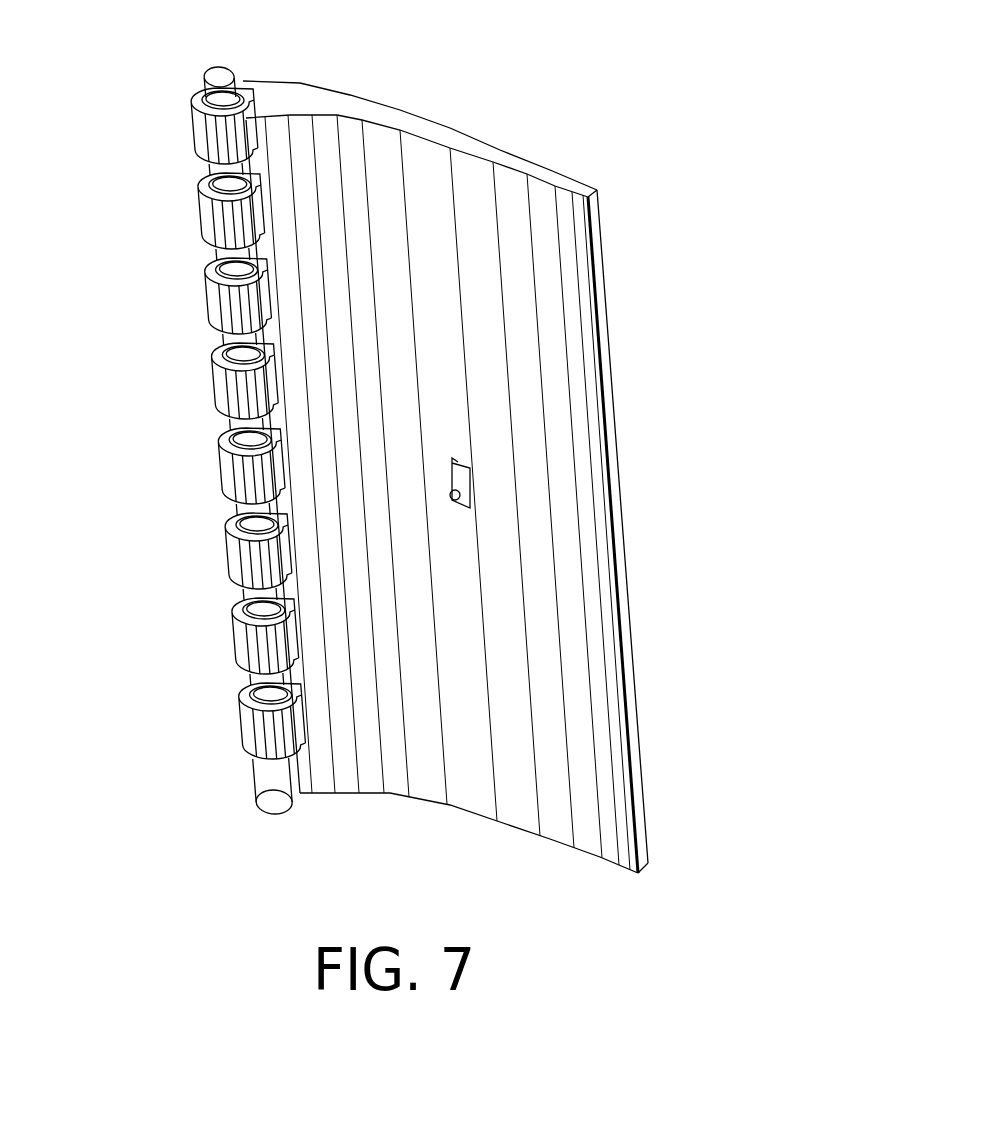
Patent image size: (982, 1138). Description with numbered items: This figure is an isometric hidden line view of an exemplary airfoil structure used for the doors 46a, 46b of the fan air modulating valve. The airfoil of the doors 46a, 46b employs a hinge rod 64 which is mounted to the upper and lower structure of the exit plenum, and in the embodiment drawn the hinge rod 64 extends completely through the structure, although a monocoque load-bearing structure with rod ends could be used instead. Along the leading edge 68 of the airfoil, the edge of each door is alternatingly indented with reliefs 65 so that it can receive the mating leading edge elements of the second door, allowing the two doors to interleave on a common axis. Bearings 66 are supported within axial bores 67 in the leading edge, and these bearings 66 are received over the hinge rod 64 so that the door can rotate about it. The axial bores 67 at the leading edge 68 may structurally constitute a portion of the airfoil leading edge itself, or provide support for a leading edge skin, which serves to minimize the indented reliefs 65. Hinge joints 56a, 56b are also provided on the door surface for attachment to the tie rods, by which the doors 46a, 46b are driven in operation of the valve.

The door 46a is at (505, 207).
The door 46b is at (445, 477).
The hinge joint 56a is at (457, 493).
The hinge joint 56b is at (460, 483).
The hinge rod 64 is at (220, 75).
The relief 65 is at (203, 163).
The bearing 66 is at (222, 348).
The axial bore 67 is at (214, 384).
The leading edge 68 is at (223, 467).